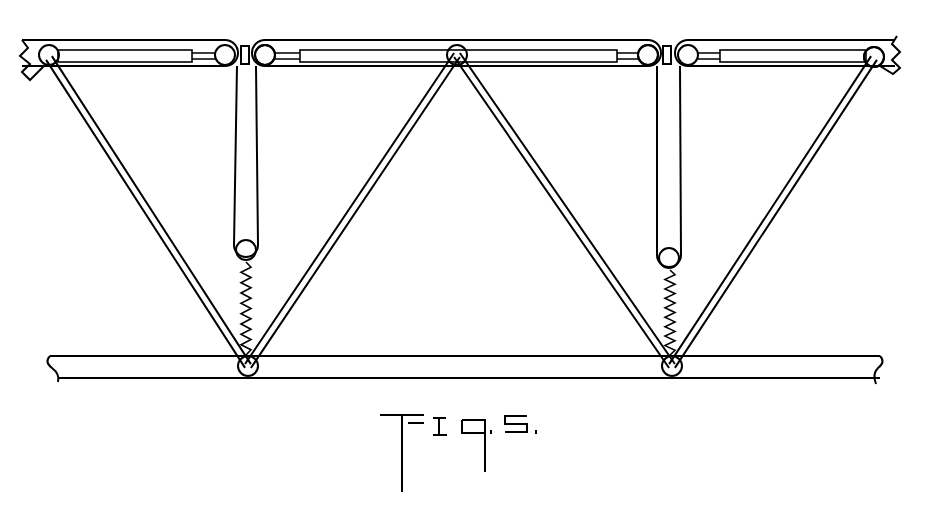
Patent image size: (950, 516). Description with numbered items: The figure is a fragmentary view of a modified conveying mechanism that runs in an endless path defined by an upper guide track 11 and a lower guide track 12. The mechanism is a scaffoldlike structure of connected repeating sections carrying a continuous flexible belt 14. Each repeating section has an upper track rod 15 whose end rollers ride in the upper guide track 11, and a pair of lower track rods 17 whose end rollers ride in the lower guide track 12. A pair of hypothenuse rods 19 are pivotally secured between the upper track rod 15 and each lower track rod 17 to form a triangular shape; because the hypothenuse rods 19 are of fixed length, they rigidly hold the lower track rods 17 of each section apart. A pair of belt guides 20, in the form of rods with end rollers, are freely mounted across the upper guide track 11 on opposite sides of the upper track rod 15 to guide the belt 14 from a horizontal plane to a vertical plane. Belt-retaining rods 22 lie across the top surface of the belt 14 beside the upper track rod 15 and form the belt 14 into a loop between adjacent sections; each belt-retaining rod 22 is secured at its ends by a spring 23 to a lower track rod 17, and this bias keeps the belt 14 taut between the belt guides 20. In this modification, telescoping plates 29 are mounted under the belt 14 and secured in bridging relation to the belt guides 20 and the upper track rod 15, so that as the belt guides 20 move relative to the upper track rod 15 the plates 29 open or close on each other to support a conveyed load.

The upper guide track 11 is at (285, 45).
The lower guide track 12 is at (520, 358).
The flexible belt 14 is at (418, 40).
The upper track rod 15 is at (876, 66).
The lower track rod 17 is at (250, 378).
The hypothenuse rod 19 is at (145, 220).
The belt guide 20 is at (270, 63).
The belt-retaining rod 22 is at (256, 250).
The spring 23 is at (250, 295).
The telescoping plate 29 is at (345, 62).